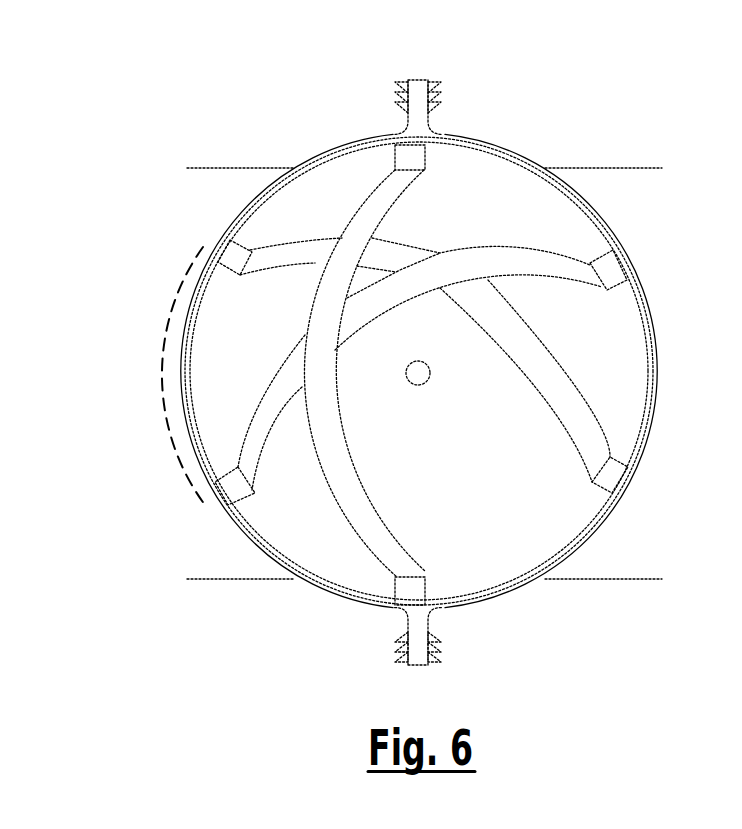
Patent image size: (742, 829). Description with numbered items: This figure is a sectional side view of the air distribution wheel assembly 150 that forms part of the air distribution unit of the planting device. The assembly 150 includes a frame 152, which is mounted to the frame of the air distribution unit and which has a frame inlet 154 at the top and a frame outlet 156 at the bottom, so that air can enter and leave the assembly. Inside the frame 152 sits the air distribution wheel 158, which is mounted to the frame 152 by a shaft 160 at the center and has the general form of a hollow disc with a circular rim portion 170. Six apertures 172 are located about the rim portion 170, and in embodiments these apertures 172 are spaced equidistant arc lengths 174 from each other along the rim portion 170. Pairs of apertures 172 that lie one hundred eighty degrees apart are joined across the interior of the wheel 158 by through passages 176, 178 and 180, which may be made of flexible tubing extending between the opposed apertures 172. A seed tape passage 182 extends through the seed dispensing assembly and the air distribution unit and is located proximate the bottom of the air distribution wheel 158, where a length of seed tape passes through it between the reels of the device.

The air distribution wheel assembly 150 is at (580, 96).
The frame 152 is at (672, 338).
The frame inlet 154 is at (420, 122).
The frame outlet 156 is at (420, 628).
The air distribution wheel 158 is at (300, 191).
The shaft 160 is at (421, 379).
The rim portion 170 is at (188, 351).
The apertures 172 is at (408, 143).
The arc lengths 174 is at (161, 378).
The through passage 176 is at (341, 478).
The through passage 178 is at (495, 262).
The through passage 180 is at (523, 333).
The seed tape passage 182 is at (513, 593).